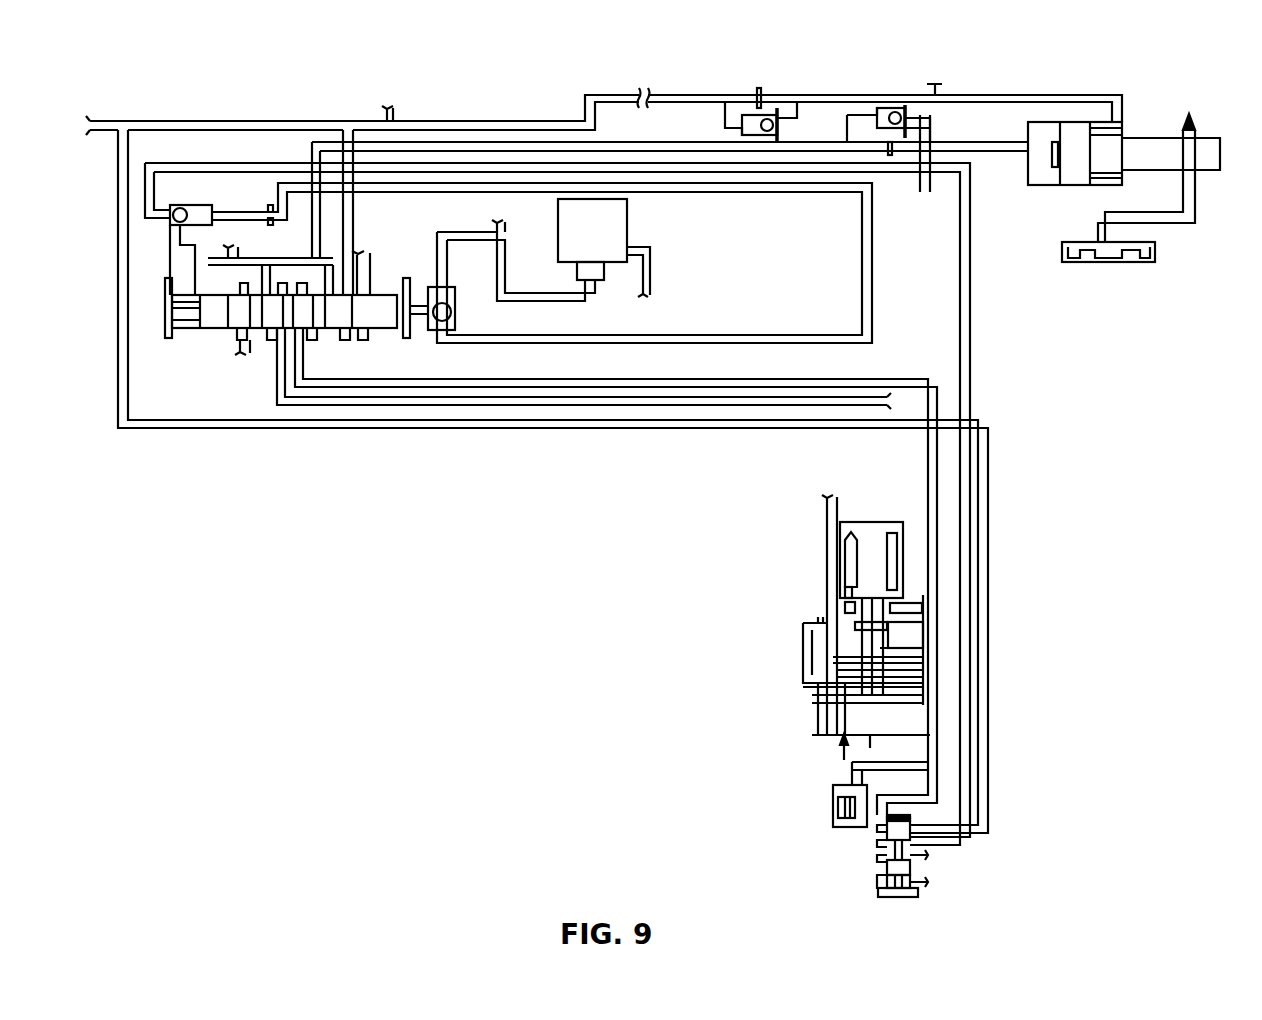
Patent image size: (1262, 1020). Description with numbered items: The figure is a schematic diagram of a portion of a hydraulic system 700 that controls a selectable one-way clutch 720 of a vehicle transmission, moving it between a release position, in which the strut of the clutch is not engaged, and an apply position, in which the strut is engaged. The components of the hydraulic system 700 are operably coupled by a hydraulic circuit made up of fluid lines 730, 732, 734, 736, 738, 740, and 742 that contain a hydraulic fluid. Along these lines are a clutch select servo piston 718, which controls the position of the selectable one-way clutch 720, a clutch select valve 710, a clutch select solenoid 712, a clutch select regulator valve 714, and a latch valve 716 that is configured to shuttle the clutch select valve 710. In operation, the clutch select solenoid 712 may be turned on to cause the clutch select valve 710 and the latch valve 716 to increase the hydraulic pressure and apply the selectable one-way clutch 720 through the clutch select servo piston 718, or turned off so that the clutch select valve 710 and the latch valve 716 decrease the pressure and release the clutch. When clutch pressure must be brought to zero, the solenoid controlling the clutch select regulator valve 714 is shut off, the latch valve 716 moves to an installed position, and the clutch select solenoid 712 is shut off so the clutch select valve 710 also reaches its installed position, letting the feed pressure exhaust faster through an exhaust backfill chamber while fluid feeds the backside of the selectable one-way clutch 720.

The hydraulic system 700 is at (320, 91).
The clutch select valve 710 is at (218, 331).
The clutch select solenoid 712 is at (636, 223).
The clutch select regulator valve 714 is at (823, 519).
The latch valve 716 is at (883, 864).
The clutch select servo piston 718 is at (1208, 138).
The selectable one-way clutch 720 is at (1144, 263).
The fluid line 730 is at (572, 431).
The fluid line 732 is at (725, 406).
The fluid line 734 is at (815, 388).
The fluid line 736 is at (974, 332).
The fluid line 738 is at (752, 334).
The fluid line 740 is at (563, 302).
The fluid line 742 is at (988, 140).